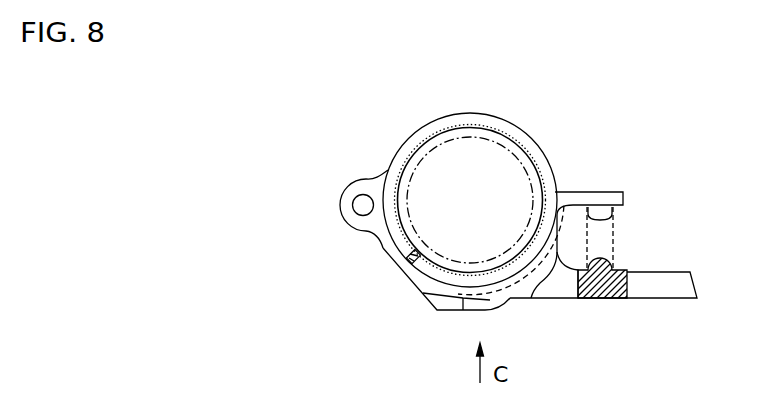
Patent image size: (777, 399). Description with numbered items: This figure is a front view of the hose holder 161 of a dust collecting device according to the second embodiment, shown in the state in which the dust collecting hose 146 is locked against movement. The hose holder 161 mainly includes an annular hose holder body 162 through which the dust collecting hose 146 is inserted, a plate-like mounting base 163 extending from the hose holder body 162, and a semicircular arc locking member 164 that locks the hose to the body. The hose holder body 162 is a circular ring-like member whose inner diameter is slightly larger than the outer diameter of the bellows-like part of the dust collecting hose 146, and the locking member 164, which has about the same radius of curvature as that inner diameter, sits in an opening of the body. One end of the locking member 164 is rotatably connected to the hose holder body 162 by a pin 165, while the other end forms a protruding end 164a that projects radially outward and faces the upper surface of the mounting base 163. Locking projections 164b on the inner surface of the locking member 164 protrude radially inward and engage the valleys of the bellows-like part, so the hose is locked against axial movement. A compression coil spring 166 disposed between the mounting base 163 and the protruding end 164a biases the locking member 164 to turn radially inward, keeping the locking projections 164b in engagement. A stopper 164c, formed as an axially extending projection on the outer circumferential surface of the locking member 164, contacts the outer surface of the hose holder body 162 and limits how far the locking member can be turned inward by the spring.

The hose holder 161 is at (517, 113).
The hose holder body 162 is at (440, 118).
The dust collecting hose 146 is at (407, 153).
The pin 165 is at (358, 203).
The locking member 164 is at (512, 292).
The protruding end 164a is at (598, 202).
The locking projection 164b is at (408, 262).
The stopper 164c is at (443, 310).
The compression coil spring 166 is at (620, 268).
The mounting base 163 is at (637, 300).